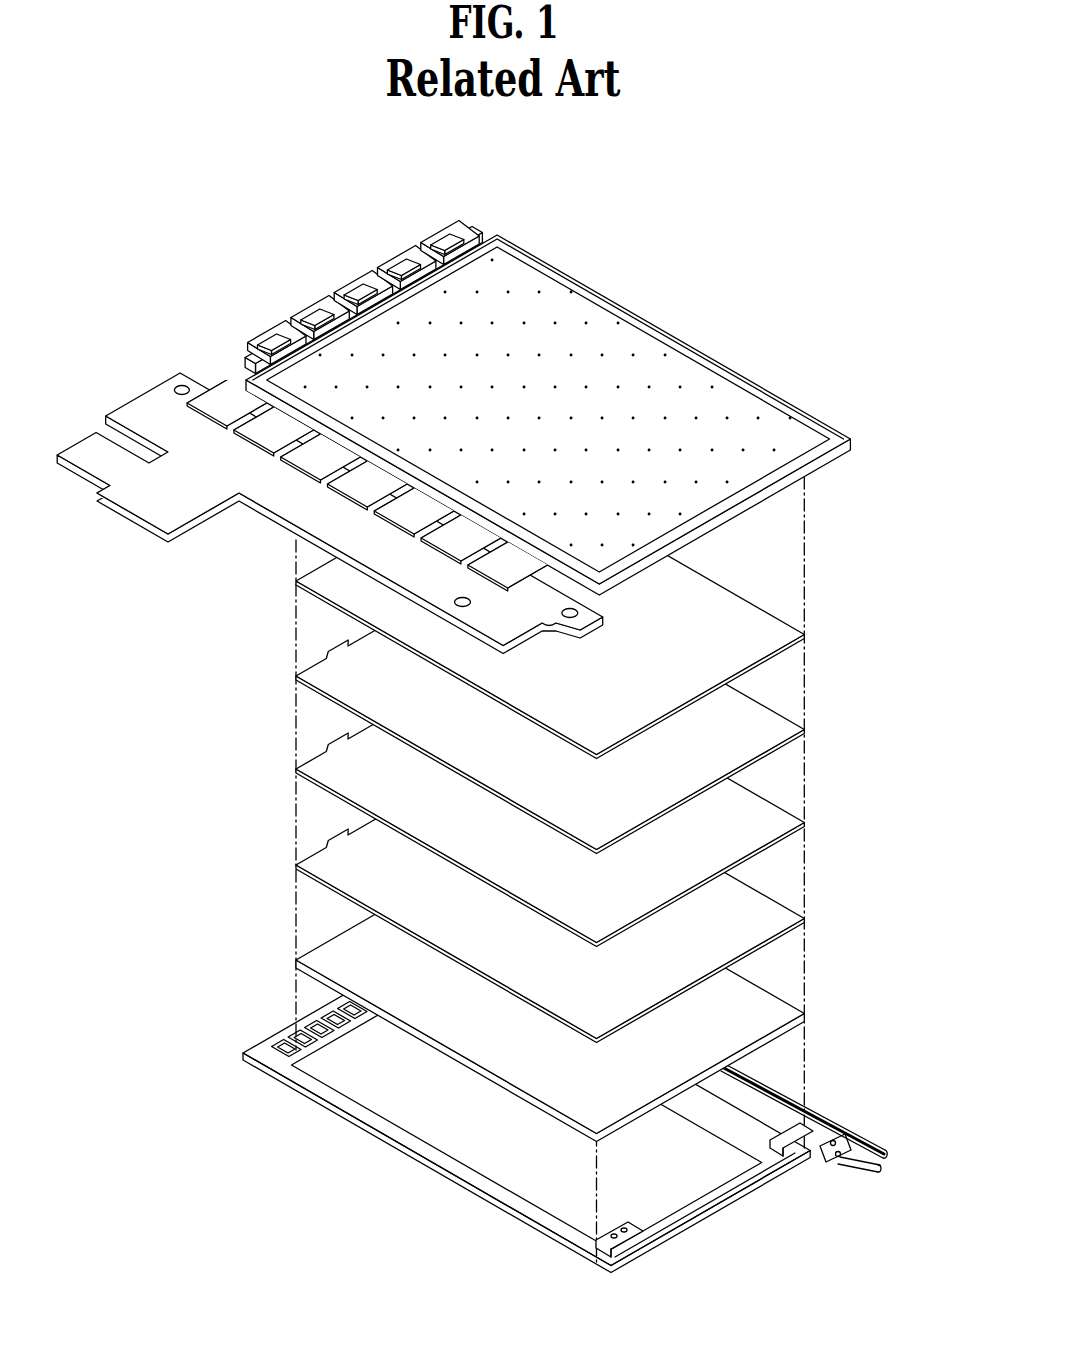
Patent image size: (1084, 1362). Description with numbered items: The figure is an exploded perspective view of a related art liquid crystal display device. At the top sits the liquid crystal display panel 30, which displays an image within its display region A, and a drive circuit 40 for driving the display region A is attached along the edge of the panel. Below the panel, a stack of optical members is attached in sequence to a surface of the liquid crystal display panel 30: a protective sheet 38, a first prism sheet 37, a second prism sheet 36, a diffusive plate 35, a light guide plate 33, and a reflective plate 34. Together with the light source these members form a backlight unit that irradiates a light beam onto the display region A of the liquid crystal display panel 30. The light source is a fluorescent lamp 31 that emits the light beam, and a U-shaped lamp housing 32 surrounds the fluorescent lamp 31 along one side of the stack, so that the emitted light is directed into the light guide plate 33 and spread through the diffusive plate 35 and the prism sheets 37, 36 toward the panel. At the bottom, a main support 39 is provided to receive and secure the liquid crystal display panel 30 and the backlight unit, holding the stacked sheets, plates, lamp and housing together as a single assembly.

The liquid crystal display panel 30 is at (818, 420).
The fluorescent lamp 31 is at (863, 1168).
The U-shaped lamp housing 32 is at (857, 1138).
The light guide plate 33 is at (792, 1004).
The reflective plate 34 is at (407, 1122).
The diffusive plate 35 is at (316, 878).
The second prism sheet 36 is at (316, 783).
The first prism sheet 37 is at (792, 719).
The protective sheet 38 is at (790, 618).
The main support 39 is at (550, 1230).
The drive circuit 40 is at (255, 352).
The display region A is at (743, 400).